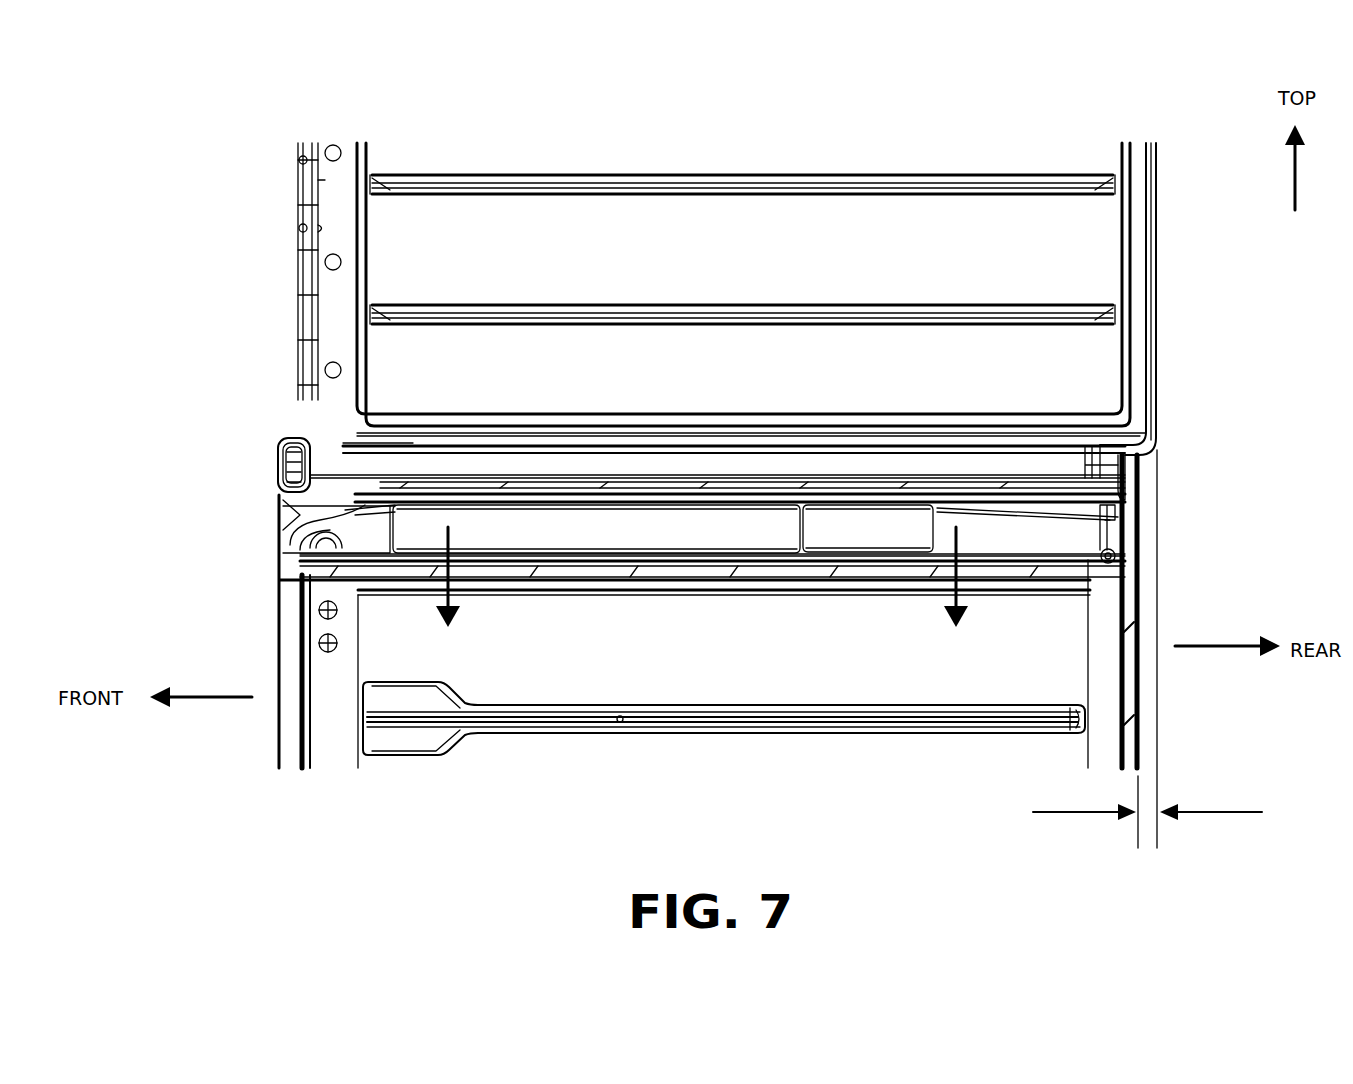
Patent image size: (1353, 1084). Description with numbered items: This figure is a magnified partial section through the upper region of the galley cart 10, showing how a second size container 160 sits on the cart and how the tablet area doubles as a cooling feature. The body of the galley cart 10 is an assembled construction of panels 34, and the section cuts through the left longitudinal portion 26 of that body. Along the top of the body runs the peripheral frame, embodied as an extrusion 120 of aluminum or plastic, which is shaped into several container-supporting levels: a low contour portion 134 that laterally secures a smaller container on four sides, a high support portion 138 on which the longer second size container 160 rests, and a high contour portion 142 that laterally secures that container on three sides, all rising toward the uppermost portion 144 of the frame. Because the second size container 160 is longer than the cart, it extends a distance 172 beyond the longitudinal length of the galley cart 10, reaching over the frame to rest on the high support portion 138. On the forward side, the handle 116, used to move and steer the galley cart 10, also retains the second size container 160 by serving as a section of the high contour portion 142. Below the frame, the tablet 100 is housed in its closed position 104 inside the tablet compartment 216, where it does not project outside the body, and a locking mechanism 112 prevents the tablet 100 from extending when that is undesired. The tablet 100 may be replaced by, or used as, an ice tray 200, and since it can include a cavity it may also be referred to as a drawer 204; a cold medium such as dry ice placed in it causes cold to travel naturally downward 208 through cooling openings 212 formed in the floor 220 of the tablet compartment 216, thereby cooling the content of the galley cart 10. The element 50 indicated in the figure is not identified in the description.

The galley cart 10 is at (138, 508).
The left longitudinal portion 26 is at (604, 639).
The panels 34 is at (659, 639).
The screw fastener 50 is at (277, 737).
The tablet 100 is at (755, 529).
The closed position 104 is at (228, 575).
The locking mechanism 112 is at (283, 540).
The handle 116 is at (307, 441).
The extrusion 120 is at (283, 468).
The low contour portion 134 is at (1043, 465).
The high support portion 138 is at (1027, 453).
The high contour portion 142 is at (305, 380).
The uppermost portion 144 is at (297, 437).
The second size container 160 is at (975, 205).
The extension beyond the longitudinal length 172 is at (1215, 812).
The ice tray 200 is at (755, 529).
The drawer 204 is at (760, 538).
The downward direction of cold 208 is at (450, 545).
The cooling openings 212 is at (482, 572).
The tablet compartment 216 is at (1085, 541).
The floor 220 is at (538, 572).